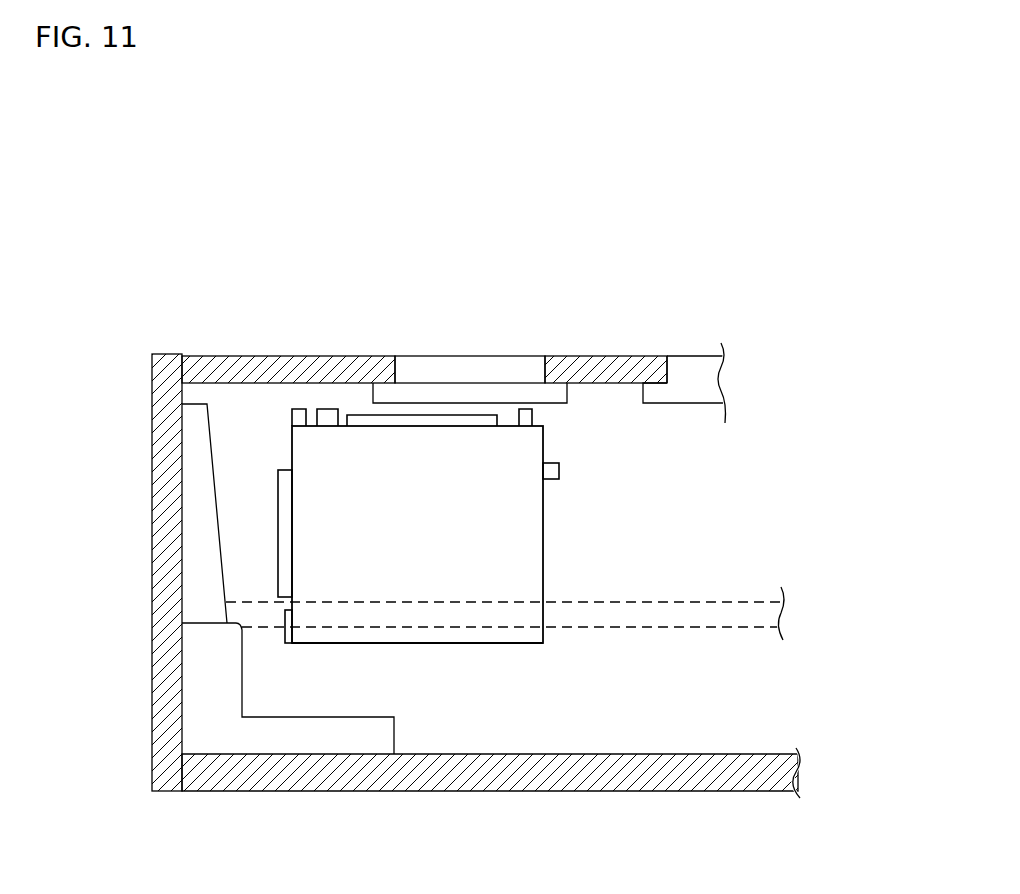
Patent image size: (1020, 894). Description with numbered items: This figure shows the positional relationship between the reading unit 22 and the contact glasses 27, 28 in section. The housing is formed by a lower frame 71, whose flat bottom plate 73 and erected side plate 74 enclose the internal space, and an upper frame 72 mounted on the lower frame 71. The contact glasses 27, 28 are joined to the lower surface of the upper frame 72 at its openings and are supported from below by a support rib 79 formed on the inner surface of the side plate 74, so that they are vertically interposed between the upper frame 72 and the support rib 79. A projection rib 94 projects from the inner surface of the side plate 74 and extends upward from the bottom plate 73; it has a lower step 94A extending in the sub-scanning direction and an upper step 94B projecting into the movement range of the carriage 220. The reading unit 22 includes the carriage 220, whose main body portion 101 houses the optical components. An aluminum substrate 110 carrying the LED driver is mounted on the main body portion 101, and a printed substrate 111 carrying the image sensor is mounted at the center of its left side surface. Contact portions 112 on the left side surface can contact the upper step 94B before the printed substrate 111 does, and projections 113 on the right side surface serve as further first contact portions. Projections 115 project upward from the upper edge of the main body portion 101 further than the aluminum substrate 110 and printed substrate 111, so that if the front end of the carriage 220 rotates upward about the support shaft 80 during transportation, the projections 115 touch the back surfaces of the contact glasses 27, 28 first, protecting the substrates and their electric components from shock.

The lower frame 71 is at (446, 614).
The upper frame 72 is at (438, 343).
The bottom plate 73 is at (608, 792).
The side plate 74 is at (152, 468).
The support rib 79 is at (212, 435).
The contact glass 27 is at (410, 381).
The contact glass 28 is at (692, 381).
The support shaft 80 is at (722, 602).
The projection rib 94 is at (283, 654).
The lower step 94A is at (373, 717).
The upper step 94B is at (204, 621).
The reading unit 22 is at (452, 498).
The main body portion 101 is at (543, 568).
The aluminum substrate 110 is at (455, 415).
The printed substrate 111 is at (283, 470).
The contact portion 112 is at (287, 643).
The projection 113 is at (560, 465).
The projection 115 is at (298, 409).
The carriage 220 is at (545, 645).